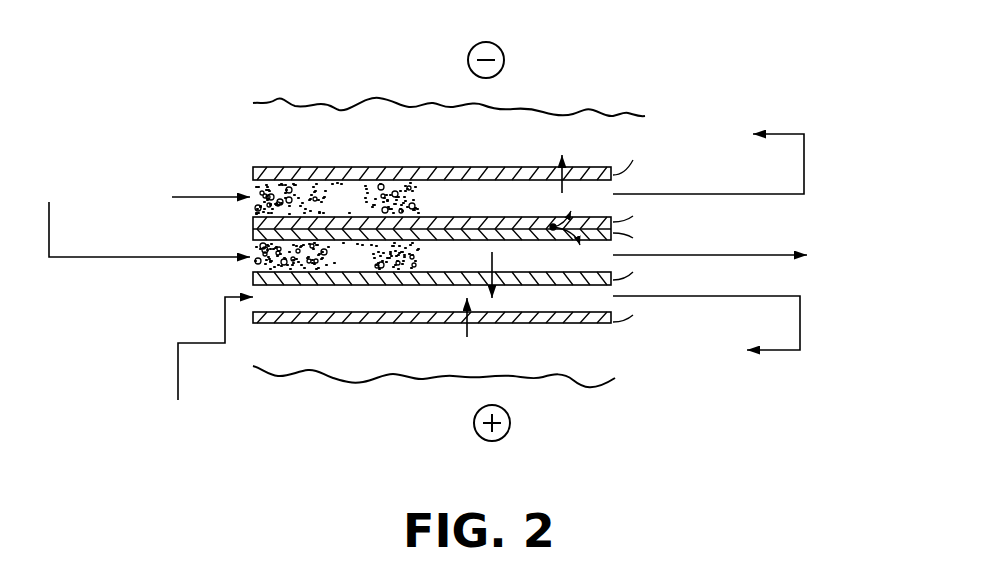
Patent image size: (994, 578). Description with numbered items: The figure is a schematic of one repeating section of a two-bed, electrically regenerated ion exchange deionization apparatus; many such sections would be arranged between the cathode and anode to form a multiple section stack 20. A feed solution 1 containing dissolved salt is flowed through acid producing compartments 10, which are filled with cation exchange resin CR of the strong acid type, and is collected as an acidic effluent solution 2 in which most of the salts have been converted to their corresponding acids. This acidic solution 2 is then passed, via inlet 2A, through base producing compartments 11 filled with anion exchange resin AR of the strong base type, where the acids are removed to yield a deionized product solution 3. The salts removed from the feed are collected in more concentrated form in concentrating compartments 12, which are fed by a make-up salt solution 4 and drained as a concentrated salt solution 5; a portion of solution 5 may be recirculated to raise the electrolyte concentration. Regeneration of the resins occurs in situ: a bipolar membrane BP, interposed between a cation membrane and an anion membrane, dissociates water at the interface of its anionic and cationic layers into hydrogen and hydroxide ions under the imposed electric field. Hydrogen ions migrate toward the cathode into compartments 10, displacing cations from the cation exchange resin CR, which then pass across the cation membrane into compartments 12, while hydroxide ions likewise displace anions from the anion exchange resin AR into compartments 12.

The stack 20 is at (214, 80).
The feed solution 1 is at (220, 195).
The acidic effluent solution 2 is at (695, 194).
The acid inlet to anion compartment 2A is at (113, 257).
The deionized product solution 3 is at (735, 255).
The salt solution 4 is at (203, 343).
The concentrated salt solution 5 is at (725, 296).
The acid producing compartments 10 is at (425, 195).
The base producing compartments 11 is at (451, 263).
The concentrating compartments 12 is at (451, 245).
The bipolar membrane BP is at (240, 228).
The cation exchange resin CR is at (337, 198).
The anion exchange resin AR is at (337, 256).